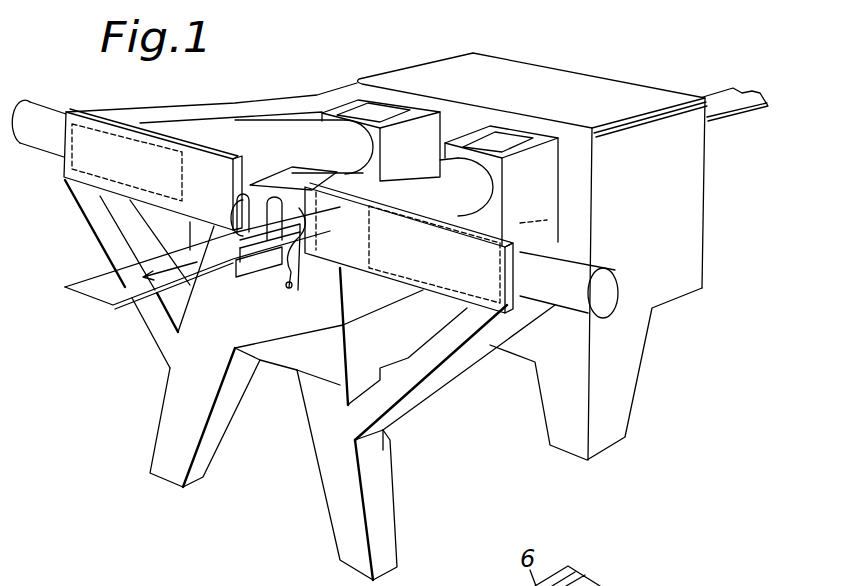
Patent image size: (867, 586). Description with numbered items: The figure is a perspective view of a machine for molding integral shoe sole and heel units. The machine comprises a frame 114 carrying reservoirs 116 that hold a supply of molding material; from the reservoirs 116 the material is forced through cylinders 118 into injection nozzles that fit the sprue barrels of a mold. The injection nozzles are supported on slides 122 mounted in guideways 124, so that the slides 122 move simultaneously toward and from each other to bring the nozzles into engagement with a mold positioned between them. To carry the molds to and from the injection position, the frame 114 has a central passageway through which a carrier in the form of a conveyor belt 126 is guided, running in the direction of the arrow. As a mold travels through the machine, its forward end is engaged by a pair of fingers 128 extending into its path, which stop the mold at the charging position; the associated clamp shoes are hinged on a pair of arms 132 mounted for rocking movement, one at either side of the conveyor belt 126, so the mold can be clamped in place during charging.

The frame 114 is at (303, 412).
The reservoirs 116 is at (358, 113).
The cylinders 118 is at (307, 141).
The slides 122 is at (38, 106).
The guideways 124 is at (172, 138).
The conveyor belt 126 is at (120, 295).
The fingers 128 is at (270, 228).
The arms 132 is at (302, 233).